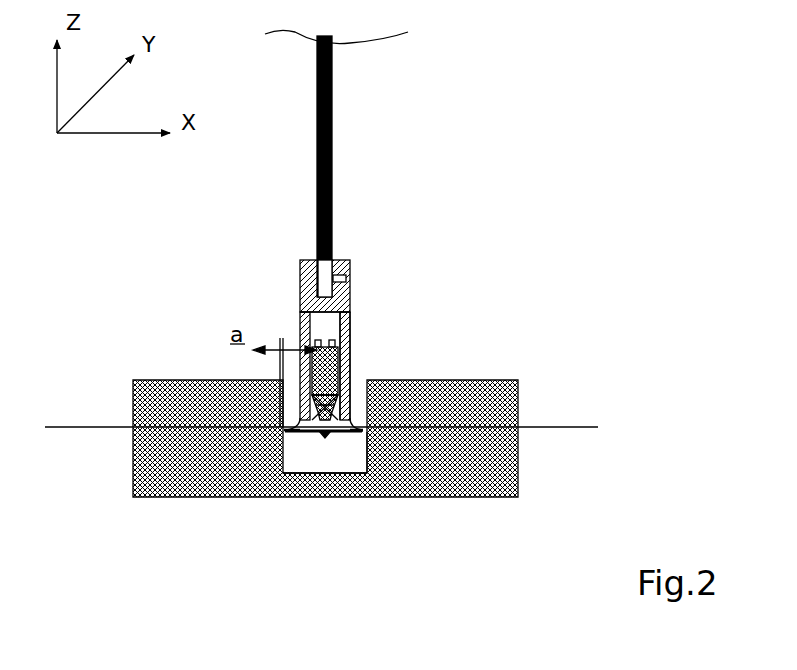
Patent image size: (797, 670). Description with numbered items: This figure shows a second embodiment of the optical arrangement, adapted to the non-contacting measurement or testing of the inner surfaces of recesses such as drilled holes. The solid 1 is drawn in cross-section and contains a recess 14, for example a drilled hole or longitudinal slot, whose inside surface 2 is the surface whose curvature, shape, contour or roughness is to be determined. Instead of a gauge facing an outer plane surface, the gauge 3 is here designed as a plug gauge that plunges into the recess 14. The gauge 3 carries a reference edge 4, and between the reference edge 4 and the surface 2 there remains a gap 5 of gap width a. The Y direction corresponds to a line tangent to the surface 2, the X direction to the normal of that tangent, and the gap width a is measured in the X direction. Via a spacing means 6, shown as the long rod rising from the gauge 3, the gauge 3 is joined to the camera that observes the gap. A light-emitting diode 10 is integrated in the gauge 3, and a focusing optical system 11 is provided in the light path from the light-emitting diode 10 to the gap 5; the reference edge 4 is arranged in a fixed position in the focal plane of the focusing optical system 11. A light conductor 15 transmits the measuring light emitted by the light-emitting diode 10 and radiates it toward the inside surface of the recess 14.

The solid 1 is at (138, 378).
The surface 2 is at (366, 458).
The gauge 3 is at (300, 322).
The reference edge 4 is at (355, 395).
The gap 5 is at (282, 432).
The spacing means 6 is at (332, 73).
The light-emitting diode 10 is at (352, 322).
The focusing optical system 11 is at (352, 392).
The recess 14 is at (308, 462).
The light conductor 15 is at (340, 435).